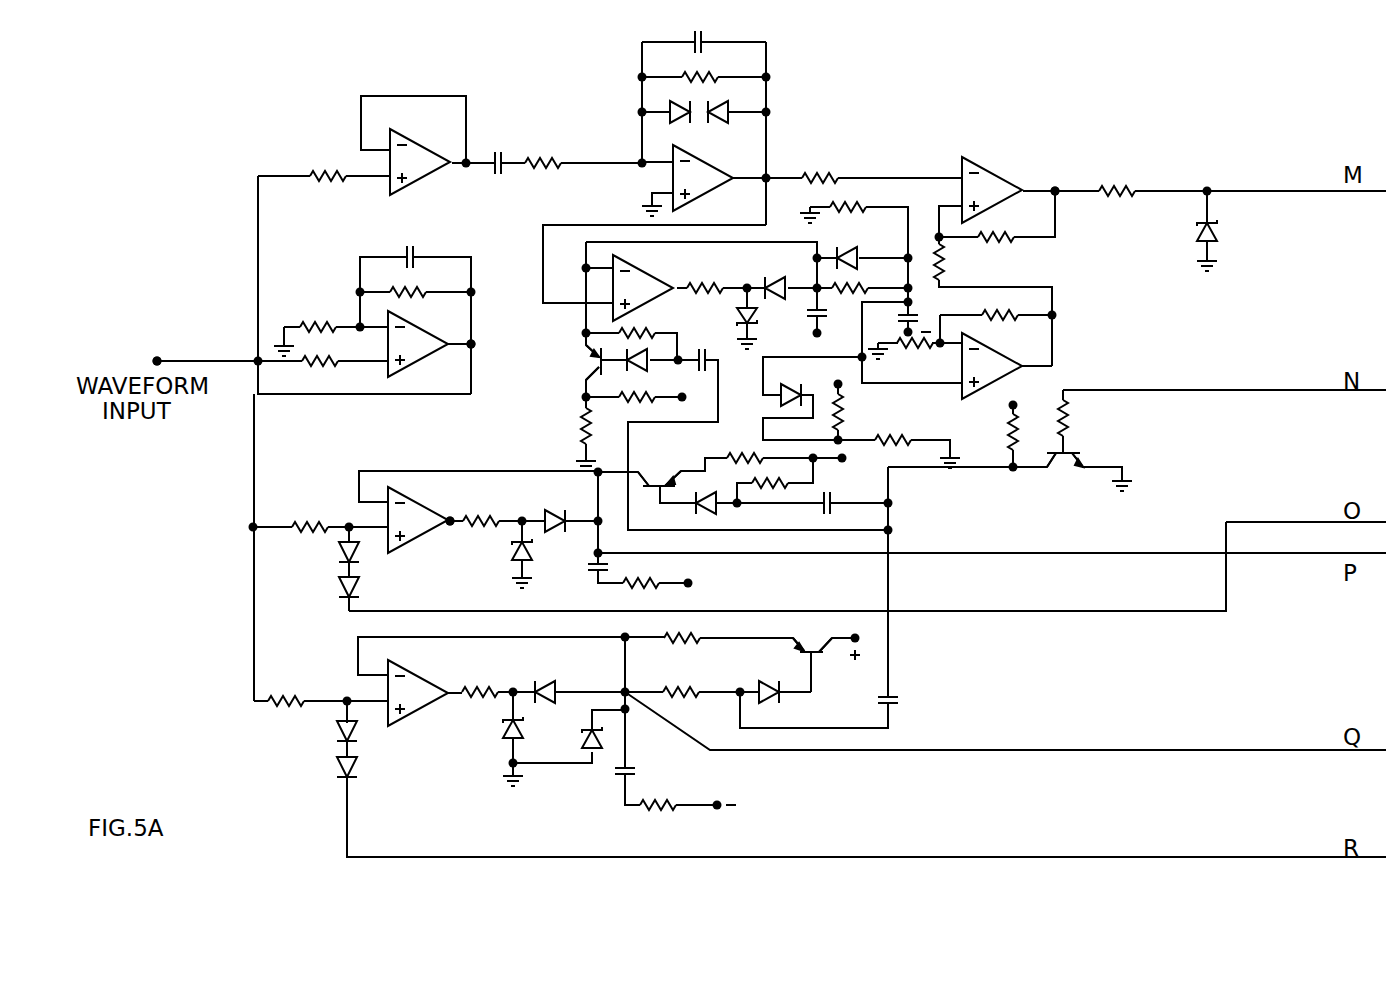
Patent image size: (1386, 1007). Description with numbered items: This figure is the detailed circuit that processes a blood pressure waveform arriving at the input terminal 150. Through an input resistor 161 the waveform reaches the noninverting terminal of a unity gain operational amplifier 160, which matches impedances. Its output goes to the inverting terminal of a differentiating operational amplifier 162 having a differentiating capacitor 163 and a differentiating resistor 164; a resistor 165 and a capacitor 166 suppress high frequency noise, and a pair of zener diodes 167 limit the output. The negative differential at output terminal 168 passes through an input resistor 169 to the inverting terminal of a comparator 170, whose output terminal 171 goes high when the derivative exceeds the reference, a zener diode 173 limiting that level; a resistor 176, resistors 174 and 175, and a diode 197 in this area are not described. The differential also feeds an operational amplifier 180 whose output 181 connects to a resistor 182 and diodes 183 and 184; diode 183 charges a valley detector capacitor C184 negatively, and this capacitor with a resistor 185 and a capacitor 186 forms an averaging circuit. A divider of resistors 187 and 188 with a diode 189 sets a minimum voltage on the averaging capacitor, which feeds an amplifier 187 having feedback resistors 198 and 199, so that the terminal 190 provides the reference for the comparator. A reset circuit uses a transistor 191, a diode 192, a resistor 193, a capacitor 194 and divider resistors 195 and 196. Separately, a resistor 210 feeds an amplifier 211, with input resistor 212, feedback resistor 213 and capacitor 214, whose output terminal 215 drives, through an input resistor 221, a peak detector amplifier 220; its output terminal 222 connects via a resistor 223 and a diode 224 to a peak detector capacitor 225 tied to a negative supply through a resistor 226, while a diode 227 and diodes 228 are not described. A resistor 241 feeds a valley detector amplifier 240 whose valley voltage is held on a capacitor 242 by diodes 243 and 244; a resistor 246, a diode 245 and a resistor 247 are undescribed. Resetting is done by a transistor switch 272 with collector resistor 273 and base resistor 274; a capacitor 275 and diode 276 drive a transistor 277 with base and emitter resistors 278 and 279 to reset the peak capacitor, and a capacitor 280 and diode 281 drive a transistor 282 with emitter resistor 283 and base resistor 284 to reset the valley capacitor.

The input terminal 150 is at (158, 358).
The input resistor 161 is at (336, 183).
The unity gain operational amplifier 160 is at (405, 186).
The differentiating capacitor 163 is at (501, 151).
The resistor 165 is at (549, 157).
The capacitor 166 is at (704, 36).
The differentiating resistor 164 is at (745, 72).
The pair of zener diodes 167 is at (706, 124).
The differentiating operational amplifier 162 is at (686, 197).
The output terminal 168 is at (774, 178).
The input resistor 169 is at (836, 178).
The resistor 196 is at (853, 213).
The comparator 170 is at (976, 211).
The output terminal 171 is at (1055, 186).
The resistor 176 is at (1118, 188).
The zener diode 173 is at (1220, 234).
The feedback resistor 174 is at (1004, 245).
The resistor 175 is at (950, 264).
The operational amplifier 180 is at (632, 262).
The output 181 is at (683, 286).
The resistor 182 is at (715, 285).
The diode 183 is at (778, 283).
The diode 184 is at (752, 314).
The minimum peak or valley detector capacitor C184 is at (813, 320).
The diode 197 is at (852, 254).
The resistor 185 is at (852, 291).
The capacitor 186 is at (912, 319).
The feedback resistor 199 is at (905, 352).
The feedback resistor 198 is at (994, 321).
The resistor 187 is at (1003, 380).
The terminal 190 is at (1036, 373).
The diode 189 is at (795, 392).
The resistor 188 is at (897, 442).
The collector resistor 273 is at (1008, 438).
The base resistor 274 is at (1072, 424).
The transistor switch 272 is at (1062, 470).
The resistor 193 is at (641, 341).
The transistor 191 is at (592, 356).
The diode 192 is at (645, 371).
The capacitor 194 is at (701, 352).
The voltage divider resistor 195 is at (581, 427).
The transistor 277 is at (670, 480).
The emitter resistor 279 is at (755, 457).
The base resistor 278 is at (778, 490).
The diode 276 is at (720, 512).
The capacitor 275 is at (828, 493).
The input resistor 221 is at (327, 510).
The peak detector amplifier 220 is at (404, 542).
The output terminal 222 is at (453, 517).
The resistor 223 is at (484, 516).
The diode 224 is at (553, 511).
The zener diode 227 is at (533, 552).
The diodes 228 is at (362, 580).
The peak detector capacitor 225 is at (593, 574).
The resistor 226 is at (634, 590).
The resistor 241 is at (290, 698).
The valley detector amplifier 240 is at (406, 717).
The resistor 246 is at (481, 689).
The diode 243 is at (546, 689).
The zener diode 245 is at (508, 745).
The diode 244 is at (585, 740).
The capacitor 242 is at (618, 777).
The resistor 247 is at (667, 811).
The emitter resistor 283 is at (684, 641).
The transistor 282 is at (811, 649).
The base resistor 284 is at (679, 688).
The diode 281 is at (766, 688).
The capacitor 280 is at (900, 706).
The input resistor 212 is at (324, 321).
The resistor 210 is at (307, 367).
The amplifier 211 is at (410, 368).
The feedback resistor 213 is at (420, 298).
The capacitor 214 is at (411, 252).
The output terminal 215 is at (474, 351).